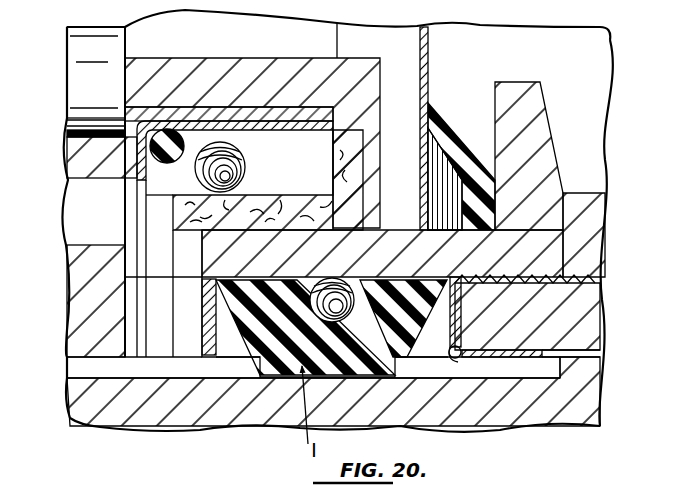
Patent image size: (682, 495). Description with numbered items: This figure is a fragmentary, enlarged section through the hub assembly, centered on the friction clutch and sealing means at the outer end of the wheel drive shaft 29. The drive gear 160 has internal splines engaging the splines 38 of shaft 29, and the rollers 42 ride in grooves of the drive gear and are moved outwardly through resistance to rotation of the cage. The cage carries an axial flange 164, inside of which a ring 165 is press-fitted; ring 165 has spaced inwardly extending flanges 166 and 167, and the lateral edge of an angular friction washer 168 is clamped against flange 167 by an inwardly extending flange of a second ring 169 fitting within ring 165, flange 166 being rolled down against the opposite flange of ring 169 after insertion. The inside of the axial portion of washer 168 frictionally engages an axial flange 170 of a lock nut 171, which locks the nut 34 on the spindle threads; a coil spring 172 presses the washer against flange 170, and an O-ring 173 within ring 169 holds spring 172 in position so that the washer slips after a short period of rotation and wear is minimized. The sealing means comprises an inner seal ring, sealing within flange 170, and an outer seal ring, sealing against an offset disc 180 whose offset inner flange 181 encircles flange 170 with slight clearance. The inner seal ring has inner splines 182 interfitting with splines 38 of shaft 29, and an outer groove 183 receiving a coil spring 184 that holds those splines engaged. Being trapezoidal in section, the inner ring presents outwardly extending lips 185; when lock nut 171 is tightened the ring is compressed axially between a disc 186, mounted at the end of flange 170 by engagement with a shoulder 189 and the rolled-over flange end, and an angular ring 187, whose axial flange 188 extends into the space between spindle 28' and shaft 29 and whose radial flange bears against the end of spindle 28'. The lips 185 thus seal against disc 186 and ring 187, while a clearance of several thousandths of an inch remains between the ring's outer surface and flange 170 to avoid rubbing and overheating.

The rollers 42 is at (80, 90).
The axial flange 164 is at (228, 60).
The ring 165 is at (173, 108).
The flange 166 is at (128, 150).
The flange 167 is at (378, 120).
The angular friction washer 168 is at (368, 164).
The ring 169 is at (310, 128).
The axial flange 170 is at (212, 244).
The lock nut 171 is at (535, 102).
The coil spring 172 is at (246, 166).
The O-ring 173 is at (158, 162).
The offset disc 180 is at (446, 116).
The offset inner flange 181 is at (426, 66).
The inner splines 182 is at (256, 374).
The outer groove 183 is at (368, 281).
The coil spring 184 is at (394, 356).
The lips 185 is at (232, 362).
The disc 186 is at (214, 340).
The angular ring 187 is at (458, 358).
The axial flange 188 is at (600, 357).
The shoulder 189 is at (213, 287).
The drive gear 160 is at (85, 326).
The nut 34 is at (595, 210).
The spindle 28' is at (548, 312).
The wheel drive shaft 29 is at (585, 380).
The splines 38 is at (80, 371).